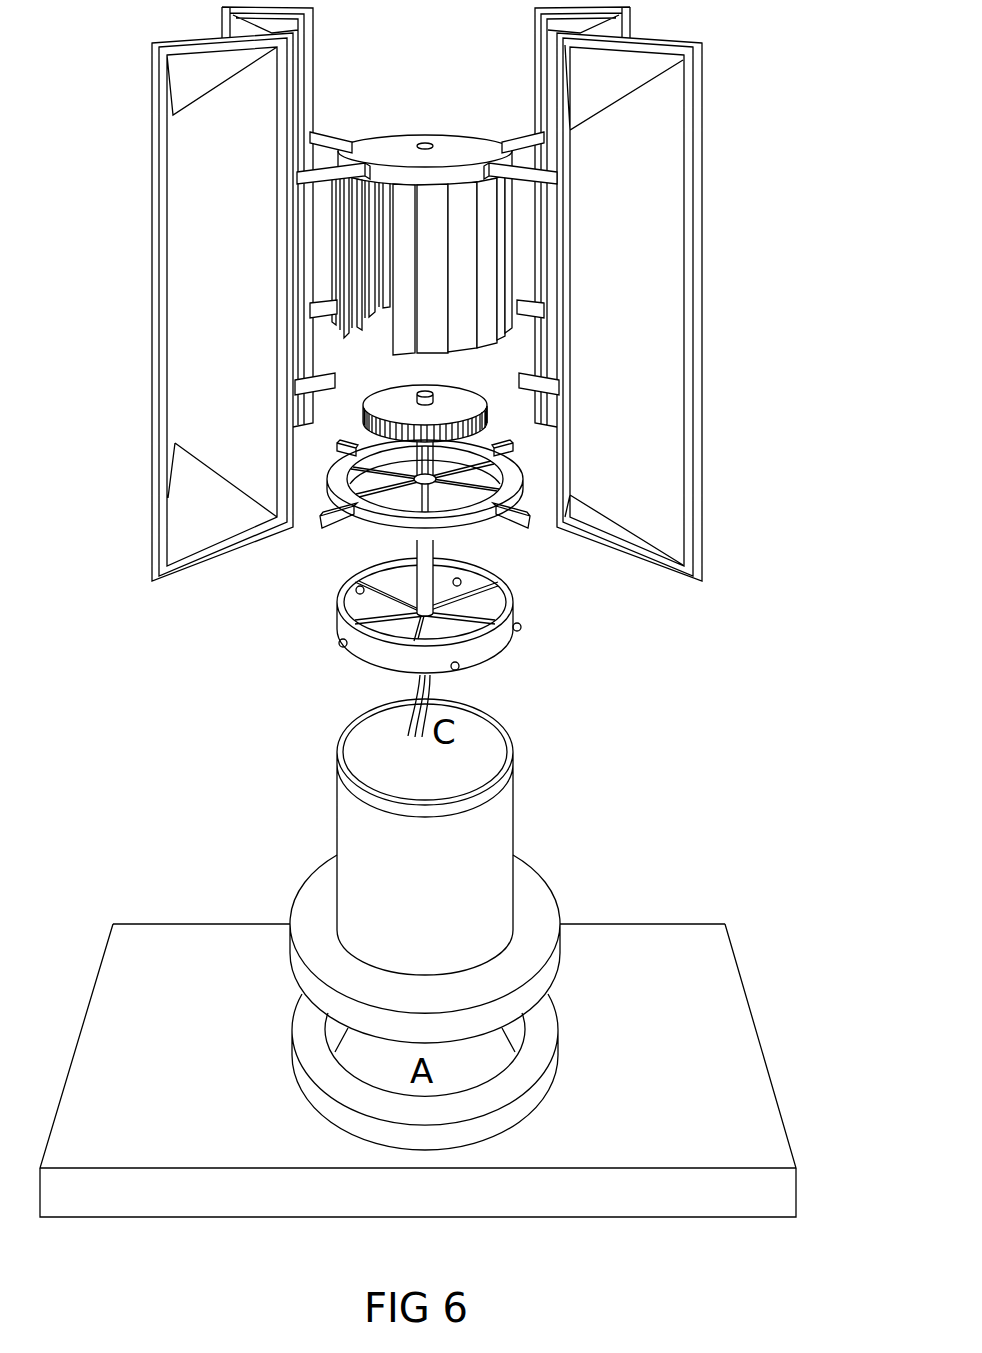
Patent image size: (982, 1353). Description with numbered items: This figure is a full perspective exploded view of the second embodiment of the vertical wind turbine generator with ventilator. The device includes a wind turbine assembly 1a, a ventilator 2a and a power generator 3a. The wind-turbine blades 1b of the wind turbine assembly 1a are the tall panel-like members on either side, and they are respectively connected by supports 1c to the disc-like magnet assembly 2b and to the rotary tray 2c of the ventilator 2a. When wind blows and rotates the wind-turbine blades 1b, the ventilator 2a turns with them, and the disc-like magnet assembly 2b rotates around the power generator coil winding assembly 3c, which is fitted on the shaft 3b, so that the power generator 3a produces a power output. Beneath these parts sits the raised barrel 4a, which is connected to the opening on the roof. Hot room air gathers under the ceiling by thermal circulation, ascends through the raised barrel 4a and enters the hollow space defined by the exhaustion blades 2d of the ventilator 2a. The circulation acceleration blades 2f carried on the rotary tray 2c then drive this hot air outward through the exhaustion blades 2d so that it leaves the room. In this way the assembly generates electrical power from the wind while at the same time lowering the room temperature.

The wind turbine assembly 1a is at (725, 217).
The wind-turbine blades 1b is at (615, 80).
The supports 1c is at (325, 140).
The ventilator 2a is at (484, 239).
The disc-like magnet assembly 2b is at (378, 172).
The rotary tray 2c is at (435, 508).
The exhaustion blades 2d is at (405, 340).
The circulation acceleration blades 2f is at (407, 503).
The power generator 3a is at (290, 553).
The shaft 3b is at (427, 562).
The power generator coil winding assembly 3c is at (452, 395).
The raised barrel 4a is at (500, 823).